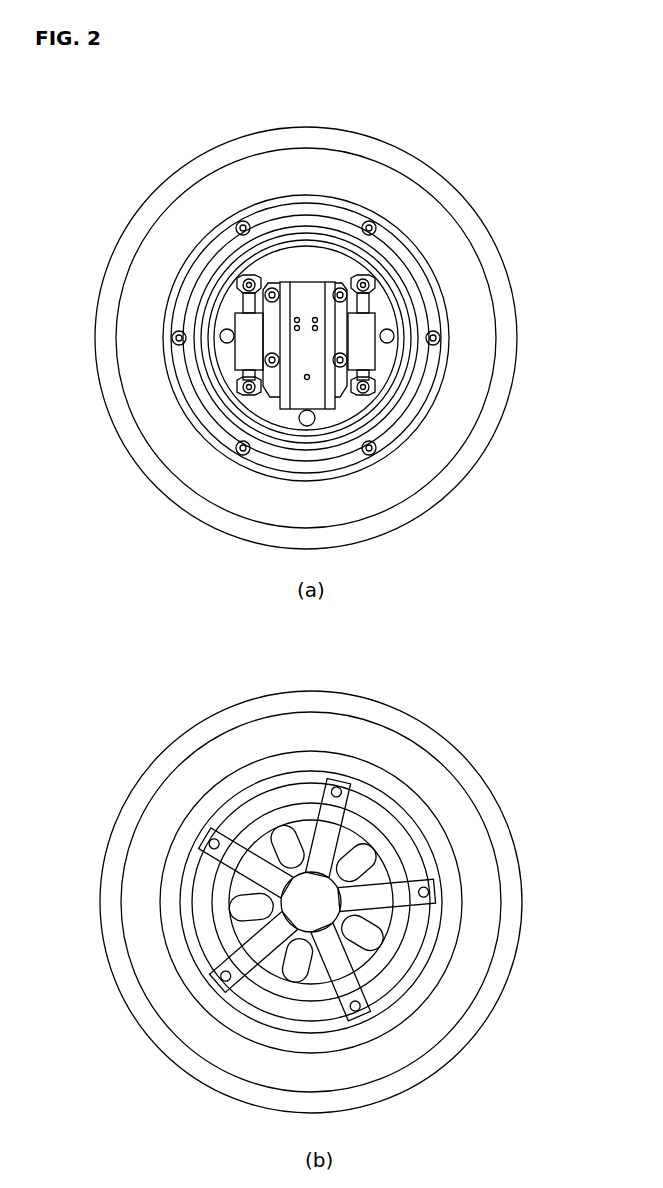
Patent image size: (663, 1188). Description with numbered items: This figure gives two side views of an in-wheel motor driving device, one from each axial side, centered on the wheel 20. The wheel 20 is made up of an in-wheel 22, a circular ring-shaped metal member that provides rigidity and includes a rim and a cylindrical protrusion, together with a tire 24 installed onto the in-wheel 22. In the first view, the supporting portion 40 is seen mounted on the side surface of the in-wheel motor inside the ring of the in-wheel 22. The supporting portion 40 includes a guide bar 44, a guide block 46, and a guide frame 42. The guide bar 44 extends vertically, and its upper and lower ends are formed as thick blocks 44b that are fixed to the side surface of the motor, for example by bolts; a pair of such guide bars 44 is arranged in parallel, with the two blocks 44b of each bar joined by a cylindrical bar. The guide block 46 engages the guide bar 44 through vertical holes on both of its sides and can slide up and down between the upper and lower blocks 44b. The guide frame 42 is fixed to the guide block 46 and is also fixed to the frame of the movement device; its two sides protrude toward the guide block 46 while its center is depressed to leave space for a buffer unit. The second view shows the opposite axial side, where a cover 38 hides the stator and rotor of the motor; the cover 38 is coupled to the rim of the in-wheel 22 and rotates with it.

The wheel 20 is at (229, 129).
The in-wheel 22 is at (423, 258).
The tire 24 is at (400, 158).
The cover 38 is at (262, 903).
The supporting portion 40 is at (351, 317).
The guide frame 42 is at (300, 398).
The guide bar 44 is at (365, 305).
The block 44b is at (377, 280).
The guide block 46 is at (372, 357).